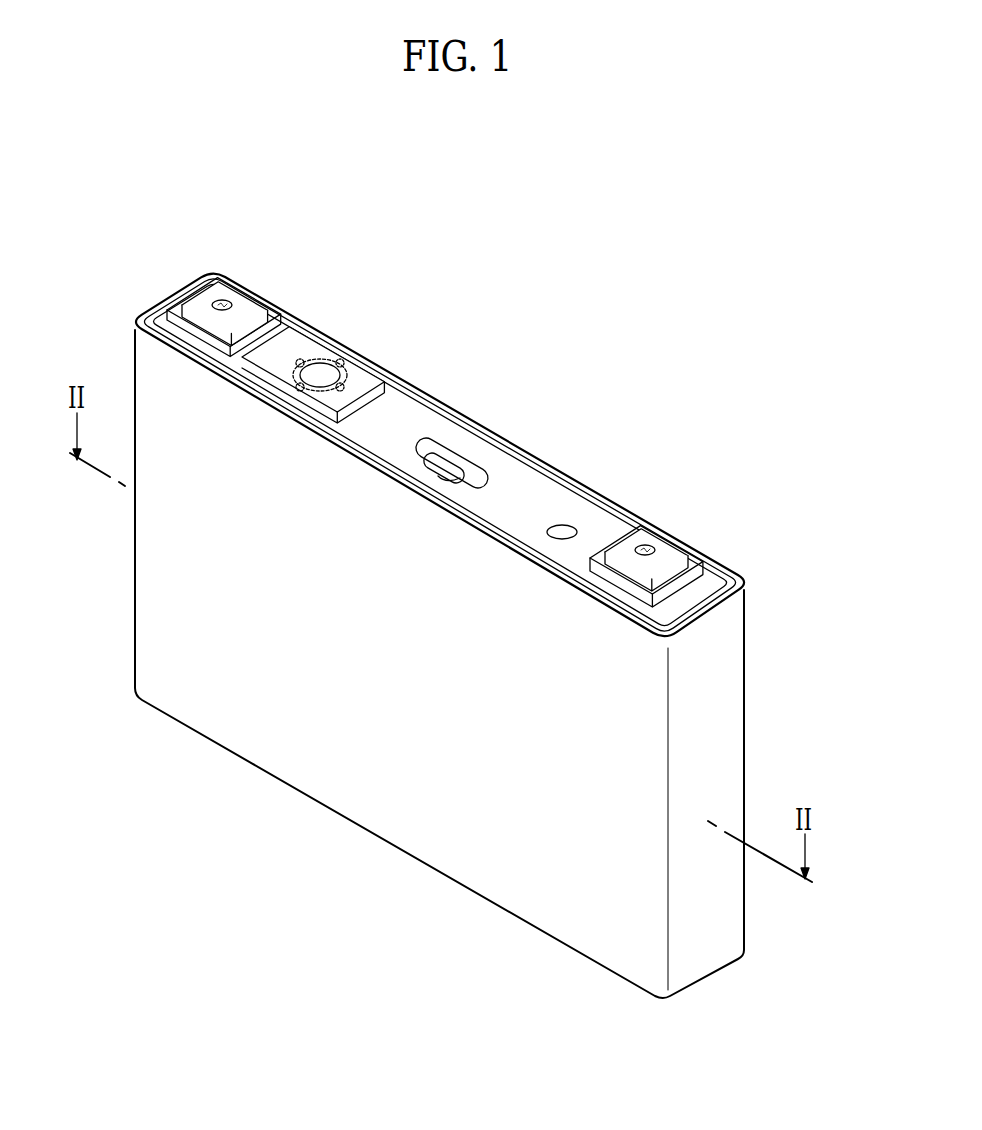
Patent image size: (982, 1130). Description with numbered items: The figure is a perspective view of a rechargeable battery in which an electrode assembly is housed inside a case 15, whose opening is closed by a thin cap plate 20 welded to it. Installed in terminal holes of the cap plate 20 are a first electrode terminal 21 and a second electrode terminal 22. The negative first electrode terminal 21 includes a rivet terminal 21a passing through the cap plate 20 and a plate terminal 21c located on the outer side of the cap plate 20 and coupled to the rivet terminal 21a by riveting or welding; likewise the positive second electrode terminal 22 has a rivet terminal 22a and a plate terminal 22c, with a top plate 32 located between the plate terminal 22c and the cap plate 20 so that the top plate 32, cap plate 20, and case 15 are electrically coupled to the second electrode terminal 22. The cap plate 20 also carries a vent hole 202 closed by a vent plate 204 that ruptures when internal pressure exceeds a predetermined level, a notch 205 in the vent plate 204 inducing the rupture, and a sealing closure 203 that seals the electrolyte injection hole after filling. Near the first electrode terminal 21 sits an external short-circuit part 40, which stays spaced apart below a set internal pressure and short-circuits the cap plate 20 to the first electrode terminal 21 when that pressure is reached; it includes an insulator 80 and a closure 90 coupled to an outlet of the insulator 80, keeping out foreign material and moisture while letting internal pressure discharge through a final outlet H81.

The case 15 is at (366, 783).
The cap plate 20 is at (405, 418).
The first electrode terminal 21 is at (218, 275).
The rivet terminal 21a is at (220, 302).
The plate terminal 21c is at (248, 308).
The second electrode terminal 22 is at (705, 572).
The rivet terminal 22a is at (647, 547).
The plate terminal 22c is at (670, 570).
The top plate 32 is at (663, 596).
The external short-circuit part 40 is at (300, 326).
The insulator 80 is at (403, 420).
The closure 90 is at (320, 374).
The final outlet H81 is at (366, 384).
The vent hole 202 is at (441, 446).
The sealing closure 203 is at (563, 530).
The vent plate 204 is at (456, 468).
The notch 205 is at (464, 481).